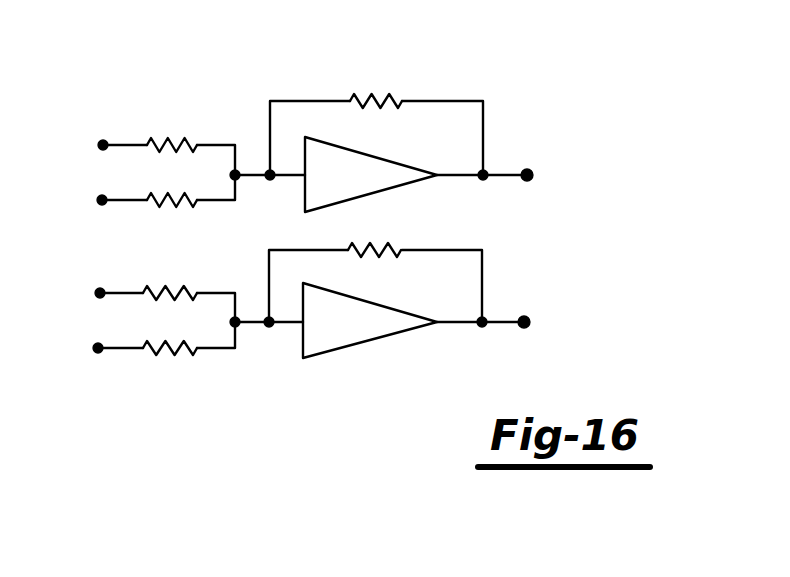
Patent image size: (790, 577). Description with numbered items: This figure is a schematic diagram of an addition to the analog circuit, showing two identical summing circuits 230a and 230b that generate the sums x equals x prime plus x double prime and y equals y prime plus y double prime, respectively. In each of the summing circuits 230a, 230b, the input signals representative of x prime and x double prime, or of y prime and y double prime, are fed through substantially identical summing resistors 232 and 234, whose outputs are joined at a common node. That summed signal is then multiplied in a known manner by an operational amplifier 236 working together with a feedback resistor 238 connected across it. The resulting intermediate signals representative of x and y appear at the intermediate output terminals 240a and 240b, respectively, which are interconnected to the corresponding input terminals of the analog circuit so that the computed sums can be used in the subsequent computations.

The summing circuit 230a is at (287, 342).
The summing circuit 230b is at (248, 46).
The summing resistor 232 is at (150, 206).
The summing resistor 234 is at (157, 147).
The operational amplifier 236 is at (370, 163).
The feedback resistor 238 is at (396, 100).
The intermediate output terminal 240a is at (527, 317).
The intermediate output terminal 240b is at (530, 170).